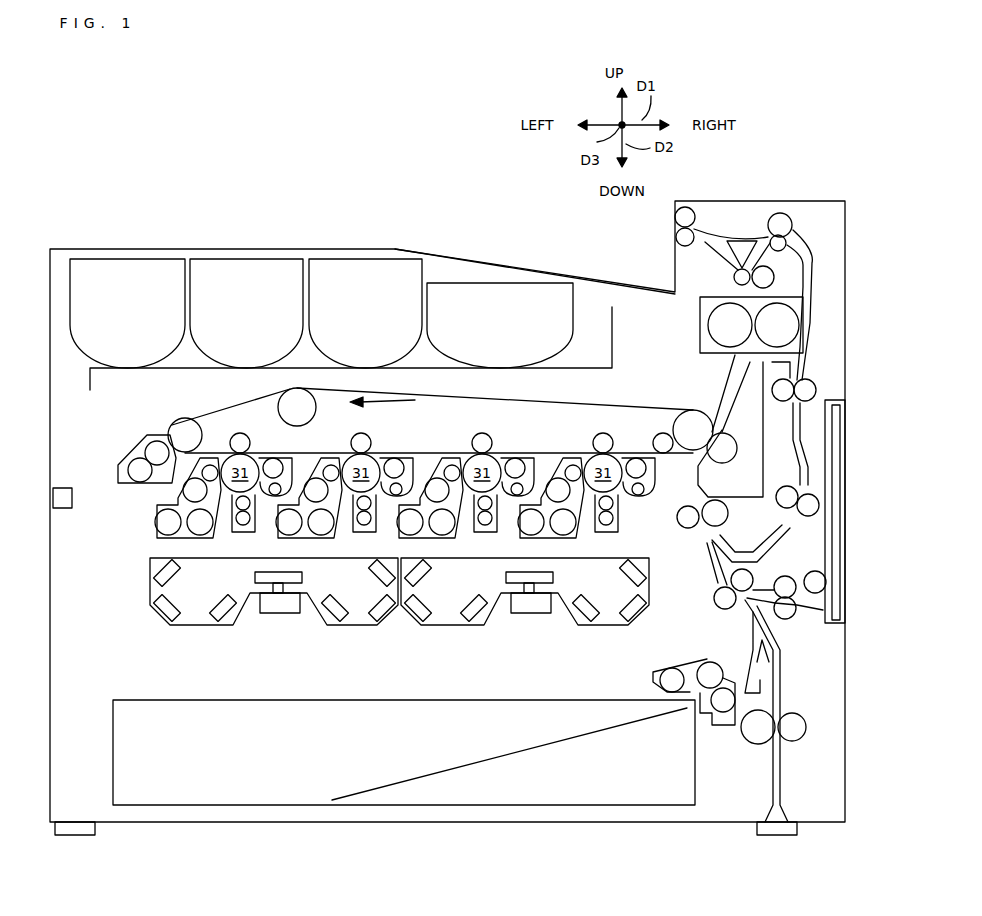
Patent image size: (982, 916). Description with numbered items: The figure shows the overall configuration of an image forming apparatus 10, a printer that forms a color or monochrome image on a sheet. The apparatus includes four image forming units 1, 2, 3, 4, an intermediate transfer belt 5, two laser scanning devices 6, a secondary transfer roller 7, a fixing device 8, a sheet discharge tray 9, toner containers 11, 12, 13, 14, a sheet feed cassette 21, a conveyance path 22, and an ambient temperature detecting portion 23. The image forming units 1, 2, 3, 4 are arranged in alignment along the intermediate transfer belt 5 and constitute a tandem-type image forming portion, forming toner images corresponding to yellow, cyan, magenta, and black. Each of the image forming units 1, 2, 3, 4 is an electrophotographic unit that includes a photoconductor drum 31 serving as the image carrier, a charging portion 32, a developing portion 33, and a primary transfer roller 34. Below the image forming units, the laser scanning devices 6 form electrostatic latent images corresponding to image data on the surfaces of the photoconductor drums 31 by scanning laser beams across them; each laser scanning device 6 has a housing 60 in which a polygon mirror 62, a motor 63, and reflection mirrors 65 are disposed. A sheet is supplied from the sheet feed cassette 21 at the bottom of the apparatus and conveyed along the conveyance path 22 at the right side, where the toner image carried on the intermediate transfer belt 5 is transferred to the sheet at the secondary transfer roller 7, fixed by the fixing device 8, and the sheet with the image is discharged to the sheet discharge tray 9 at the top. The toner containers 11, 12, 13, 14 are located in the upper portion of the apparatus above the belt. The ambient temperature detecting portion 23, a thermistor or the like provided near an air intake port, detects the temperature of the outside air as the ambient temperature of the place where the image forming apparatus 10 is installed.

The image forming unit 1 is at (257, 448).
The image forming unit 2 is at (379, 448).
The image forming unit 3 is at (499, 448).
The image forming unit 4 is at (620, 445).
The intermediate transfer belt 5 is at (207, 412).
The laser scanning device 6 is at (327, 644).
The secondary transfer roller 7 is at (733, 462).
The fixing device 8 is at (700, 333).
The sheet discharge tray 9 is at (590, 278).
The image forming apparatus 10 is at (82, 200).
The toner container 11 is at (162, 258).
The toner container 12 is at (280, 258).
The toner container 13 is at (387, 258).
The toner container 14 is at (535, 283).
The sheet feed cassette 21 is at (182, 808).
The conveyance path 22 is at (713, 580).
The ambient temperature detecting portion 23 is at (65, 509).
The photoconductor drum 31 is at (421, 473).
The charging portion 32 is at (236, 533).
The developing portion 33 is at (157, 534).
The primary transfer roller 34 is at (247, 435).
The housing 60 is at (190, 628).
The polygon mirror 62 is at (255, 577).
The motor 63 is at (283, 615).
The reflection mirror 65 is at (153, 584).